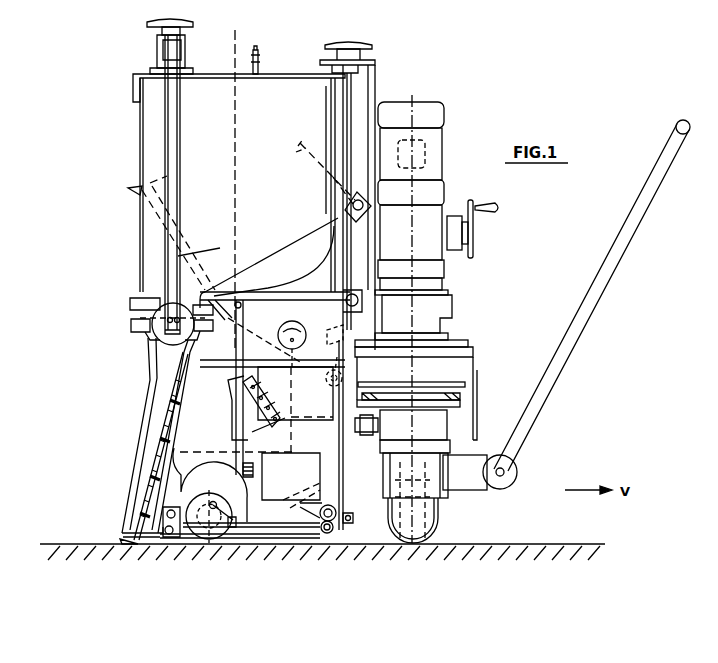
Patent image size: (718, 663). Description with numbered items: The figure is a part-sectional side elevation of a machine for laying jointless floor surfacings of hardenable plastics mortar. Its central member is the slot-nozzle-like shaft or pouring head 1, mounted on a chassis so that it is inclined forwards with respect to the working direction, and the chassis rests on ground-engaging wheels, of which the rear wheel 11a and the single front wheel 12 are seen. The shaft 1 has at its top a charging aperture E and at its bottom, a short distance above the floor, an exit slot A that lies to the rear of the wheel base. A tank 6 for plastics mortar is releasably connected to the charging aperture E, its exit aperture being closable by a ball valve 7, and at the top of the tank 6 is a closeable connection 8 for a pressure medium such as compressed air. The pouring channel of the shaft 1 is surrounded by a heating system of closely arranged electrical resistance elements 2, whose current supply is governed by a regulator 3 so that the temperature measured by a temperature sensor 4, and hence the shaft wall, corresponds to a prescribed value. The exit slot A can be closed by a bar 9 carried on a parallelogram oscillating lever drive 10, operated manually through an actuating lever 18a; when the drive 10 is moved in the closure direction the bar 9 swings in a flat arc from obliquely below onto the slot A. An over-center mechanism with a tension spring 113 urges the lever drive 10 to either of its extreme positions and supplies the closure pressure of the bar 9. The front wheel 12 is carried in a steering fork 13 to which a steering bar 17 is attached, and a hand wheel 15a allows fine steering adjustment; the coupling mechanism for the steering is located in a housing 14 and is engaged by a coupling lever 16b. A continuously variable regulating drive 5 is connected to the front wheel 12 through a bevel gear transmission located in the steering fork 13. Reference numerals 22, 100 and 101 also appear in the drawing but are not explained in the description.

The pouring head 1 is at (160, 410).
The electrical resistance elements 2 is at (153, 432).
The regulator 3 is at (300, 335).
The temperature sensor 4 is at (146, 458).
The regulating drive 5 is at (440, 266).
The tank 6 is at (140, 152).
The ball valve 7 is at (160, 322).
The closeable connection 8 is at (259, 64).
The bar 9 is at (155, 537).
The oscillating lever drive 10 is at (272, 540).
The rear wheel 11a is at (213, 540).
The front wheel 12 is at (410, 488).
The steering fork 13 is at (435, 490).
The housing 14 is at (291, 497).
The hand wheel 15a is at (135, 192).
The coupling lever 16b is at (341, 347).
The steering bar 17 is at (573, 344).
The actuating lever 18a is at (312, 163).
The cross beam 22 is at (133, 301).
The foot bracket 100 is at (168, 520).
The rollers 101 is at (334, 522).
The tension spring 113 is at (231, 512).
The exit slot A is at (126, 543).
The charging aperture E is at (155, 343).